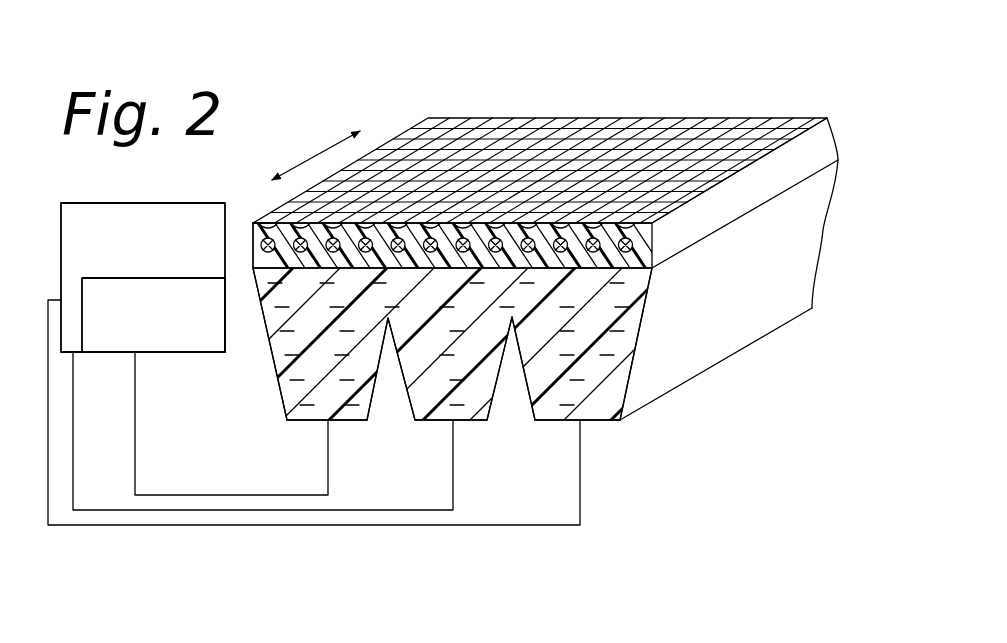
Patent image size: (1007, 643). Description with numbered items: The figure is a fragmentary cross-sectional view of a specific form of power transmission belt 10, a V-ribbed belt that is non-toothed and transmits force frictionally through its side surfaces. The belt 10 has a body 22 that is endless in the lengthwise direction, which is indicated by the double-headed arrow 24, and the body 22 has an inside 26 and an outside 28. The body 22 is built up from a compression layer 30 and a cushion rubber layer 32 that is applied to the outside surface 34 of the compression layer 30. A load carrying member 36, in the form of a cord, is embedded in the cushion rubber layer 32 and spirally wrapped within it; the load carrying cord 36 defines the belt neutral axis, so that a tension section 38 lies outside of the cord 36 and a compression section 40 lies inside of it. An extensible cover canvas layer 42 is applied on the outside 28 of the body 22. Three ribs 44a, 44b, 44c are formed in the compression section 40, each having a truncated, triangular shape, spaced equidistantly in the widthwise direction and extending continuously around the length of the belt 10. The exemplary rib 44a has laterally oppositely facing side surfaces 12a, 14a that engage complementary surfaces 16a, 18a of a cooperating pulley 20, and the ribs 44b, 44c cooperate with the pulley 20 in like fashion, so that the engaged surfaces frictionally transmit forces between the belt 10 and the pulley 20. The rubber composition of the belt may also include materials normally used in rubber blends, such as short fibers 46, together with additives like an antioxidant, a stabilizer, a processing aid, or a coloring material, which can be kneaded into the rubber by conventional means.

The power transmission belt 10 is at (744, 75).
The side surface 12a is at (283, 398).
The side surface 14a is at (387, 422).
The complementary surface 16a is at (135, 346).
The complementary surface 18a is at (184, 346).
The pulley 20 is at (121, 268).
The body 22 is at (775, 312).
The double-headed arrow 24 is at (305, 153).
The inside 26 is at (473, 422).
The outside 28 is at (562, 229).
The compression layer 30 is at (634, 337).
The cushion rubber layer 32 is at (252, 252).
The outside surface 34 is at (447, 232).
The load carrying member 36 is at (655, 243).
The tension section 38 is at (249, 222).
The compression section 40 is at (270, 378).
The cover canvas layer 42 is at (476, 229).
The rib 44a is at (345, 422).
The rib 44b is at (487, 422).
The rib 44c is at (597, 422).
The short fibers 46 is at (368, 335).